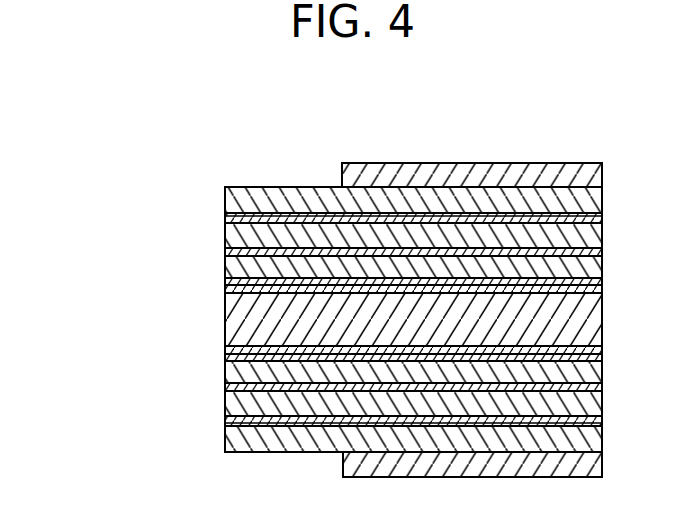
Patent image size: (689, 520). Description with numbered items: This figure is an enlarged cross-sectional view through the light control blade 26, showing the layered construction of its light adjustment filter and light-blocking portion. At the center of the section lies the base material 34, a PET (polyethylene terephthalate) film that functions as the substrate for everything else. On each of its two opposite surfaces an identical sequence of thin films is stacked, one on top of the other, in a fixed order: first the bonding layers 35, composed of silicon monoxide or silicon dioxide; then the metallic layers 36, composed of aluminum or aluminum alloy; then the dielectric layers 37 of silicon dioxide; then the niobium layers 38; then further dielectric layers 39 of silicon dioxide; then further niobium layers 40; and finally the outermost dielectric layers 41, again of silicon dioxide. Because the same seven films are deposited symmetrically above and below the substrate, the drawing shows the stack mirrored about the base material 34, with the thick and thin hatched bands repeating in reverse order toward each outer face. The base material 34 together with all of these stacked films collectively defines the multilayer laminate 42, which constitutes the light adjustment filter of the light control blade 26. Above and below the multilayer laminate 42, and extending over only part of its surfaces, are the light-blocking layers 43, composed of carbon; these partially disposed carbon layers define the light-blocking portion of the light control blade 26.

The light control blade 26 is at (543, 122).
The base material 34 is at (225, 323).
The bonding layers 35 is at (225, 293).
The metallic layers 36 is at (225, 286).
The dielectric layers 37 is at (225, 271).
The niobium layers 38 is at (225, 255).
The dielectric layers 39 is at (225, 238).
The niobium layers 40 is at (225, 217).
The dielectric layers 41 is at (225, 200).
The multilayer laminate 42 is at (93, 505).
The light-blocking layers 43 is at (342, 168).